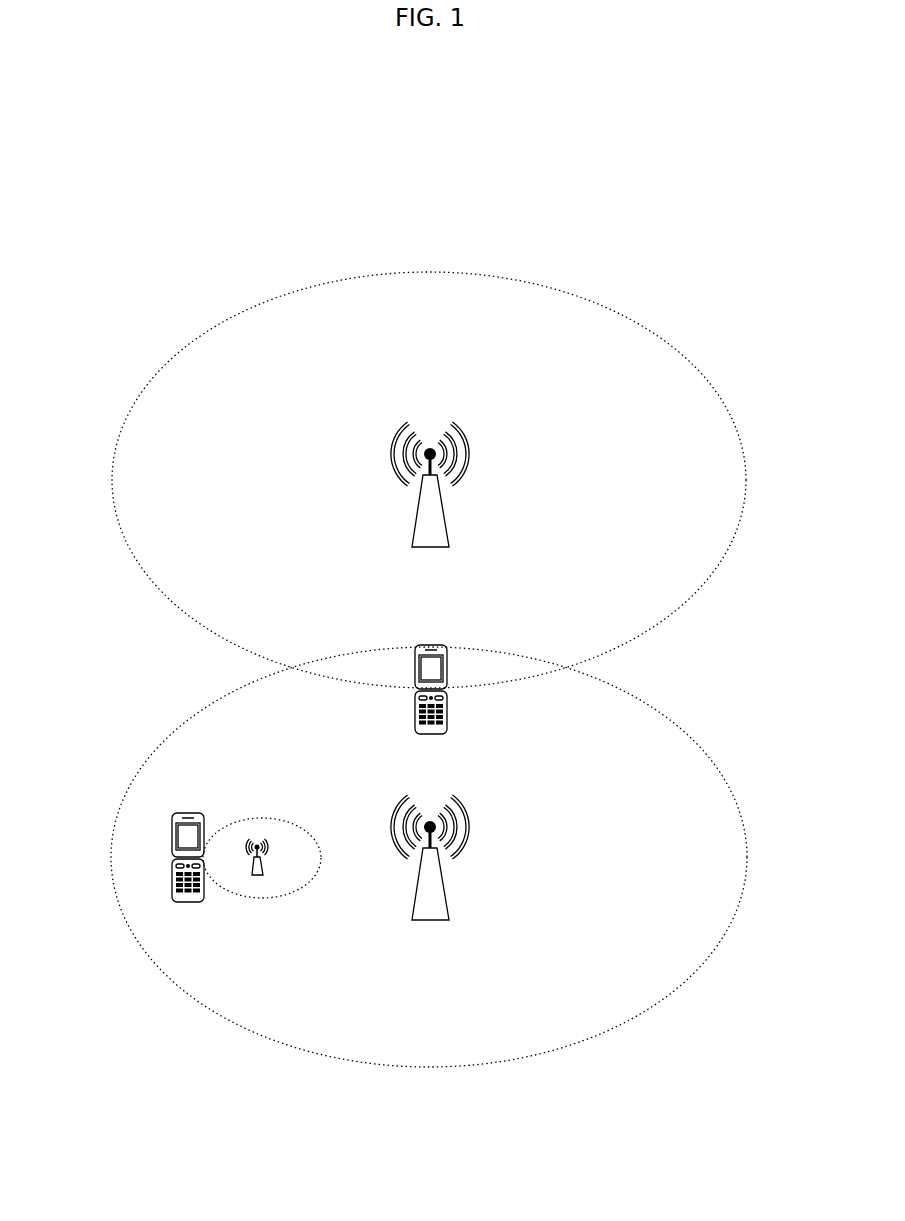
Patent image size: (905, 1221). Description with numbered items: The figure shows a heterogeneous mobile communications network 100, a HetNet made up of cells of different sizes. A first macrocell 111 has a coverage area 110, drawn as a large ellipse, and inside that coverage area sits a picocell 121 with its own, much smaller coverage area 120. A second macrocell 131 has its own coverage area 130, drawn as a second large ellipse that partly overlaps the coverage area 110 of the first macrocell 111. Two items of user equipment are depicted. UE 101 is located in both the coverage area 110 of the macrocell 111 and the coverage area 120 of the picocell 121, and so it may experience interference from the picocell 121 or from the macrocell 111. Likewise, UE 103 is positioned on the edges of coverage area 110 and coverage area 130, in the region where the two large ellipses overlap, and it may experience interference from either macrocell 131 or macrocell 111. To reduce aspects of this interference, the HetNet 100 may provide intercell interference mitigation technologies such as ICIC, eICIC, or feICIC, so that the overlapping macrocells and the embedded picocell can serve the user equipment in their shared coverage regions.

The heterogeneous mobile communications network 100 is at (762, 160).
The UE 101 is at (172, 858).
The UE 103 is at (410, 689).
The coverage area 110 is at (748, 857).
The macrocell 111 is at (430, 858).
The coverage area 120 is at (257, 815).
The picocell 121 is at (257, 877).
The coverage area 130 is at (745, 478).
The macrocell 131 is at (432, 485).